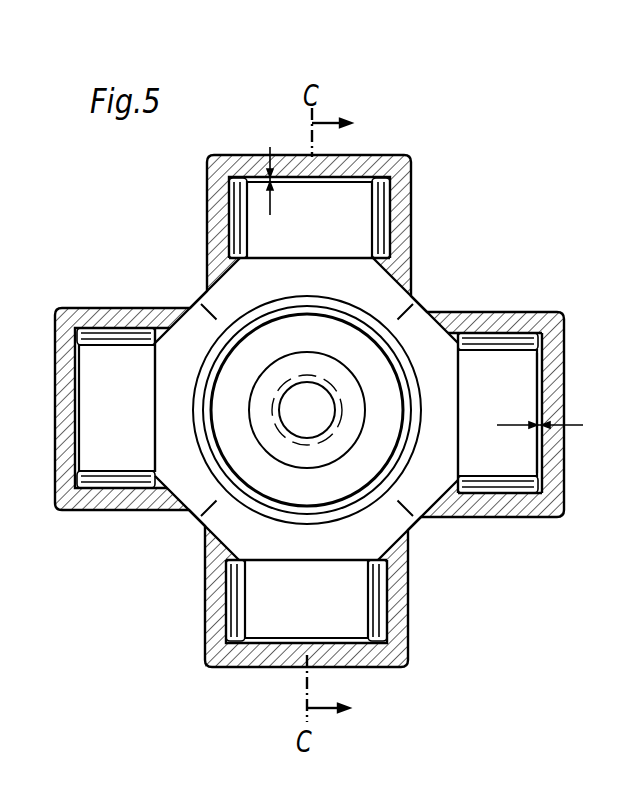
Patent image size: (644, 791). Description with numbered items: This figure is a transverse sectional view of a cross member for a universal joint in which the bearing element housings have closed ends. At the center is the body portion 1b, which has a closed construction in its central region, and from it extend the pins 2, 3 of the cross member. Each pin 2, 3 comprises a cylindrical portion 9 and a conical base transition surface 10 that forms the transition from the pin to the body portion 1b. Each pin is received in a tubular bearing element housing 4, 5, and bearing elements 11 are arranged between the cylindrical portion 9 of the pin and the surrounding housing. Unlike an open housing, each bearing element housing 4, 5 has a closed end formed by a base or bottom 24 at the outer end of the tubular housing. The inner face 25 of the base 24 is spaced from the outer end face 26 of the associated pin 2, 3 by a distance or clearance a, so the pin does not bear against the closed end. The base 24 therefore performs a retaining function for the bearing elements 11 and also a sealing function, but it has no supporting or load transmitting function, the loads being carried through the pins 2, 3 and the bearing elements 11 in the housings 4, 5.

The body portion 1b is at (430, 335).
The pin 2 is at (357, 203).
The pin 3 is at (522, 389).
The bearing element housing 4 is at (370, 166).
The bearing element housing 5 is at (557, 330).
The cylindrical portion 9 is at (376, 233).
The conical base transition surface 10 is at (397, 273).
The bearing elements 11 is at (481, 343).
The base 24 is at (252, 162).
The inner face 25 is at (545, 359).
The outer end face 26 is at (334, 175).
The clearance a is at (425, 289).